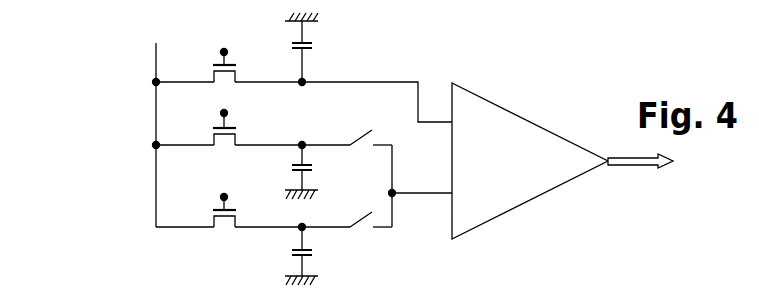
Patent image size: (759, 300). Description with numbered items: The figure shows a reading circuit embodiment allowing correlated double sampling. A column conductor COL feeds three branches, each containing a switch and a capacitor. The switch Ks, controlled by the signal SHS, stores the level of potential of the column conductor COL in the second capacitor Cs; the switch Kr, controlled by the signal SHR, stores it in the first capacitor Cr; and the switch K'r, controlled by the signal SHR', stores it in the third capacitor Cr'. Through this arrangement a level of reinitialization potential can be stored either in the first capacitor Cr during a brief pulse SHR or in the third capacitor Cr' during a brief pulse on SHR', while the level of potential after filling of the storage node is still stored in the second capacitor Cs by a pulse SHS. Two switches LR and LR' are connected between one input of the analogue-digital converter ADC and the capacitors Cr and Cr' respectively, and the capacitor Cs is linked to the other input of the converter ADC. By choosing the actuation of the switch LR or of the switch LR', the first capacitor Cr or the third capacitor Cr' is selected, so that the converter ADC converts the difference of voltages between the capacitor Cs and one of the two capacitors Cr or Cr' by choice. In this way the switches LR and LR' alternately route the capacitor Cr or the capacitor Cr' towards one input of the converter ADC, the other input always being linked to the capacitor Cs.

The column conductor COL is at (133, 133).
The signal SHS is at (200, 46).
The switch Ks is at (226, 83).
The second capacitor Cs is at (315, 47).
The signal SHR is at (196, 116).
The switch Kr is at (225, 147).
The first capacitor Cr is at (291, 172).
The switch LR is at (347, 130).
The signal SHR' is at (196, 192).
The switch Kr' K'r is at (225, 230).
The third capacitor Cr' is at (290, 256).
The switch LR' is at (347, 213).
The analogue-digital converter ADC is at (562, 161).